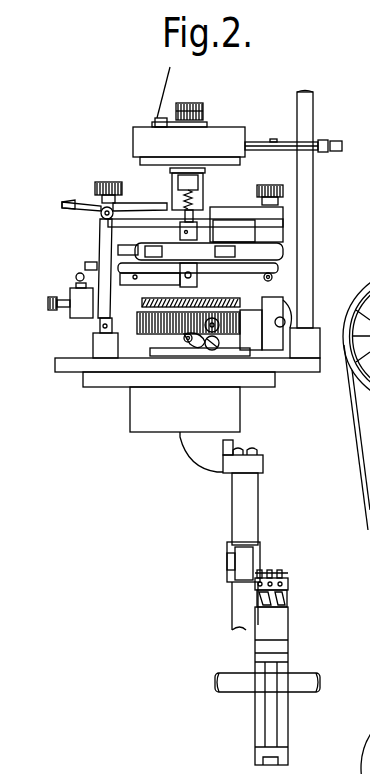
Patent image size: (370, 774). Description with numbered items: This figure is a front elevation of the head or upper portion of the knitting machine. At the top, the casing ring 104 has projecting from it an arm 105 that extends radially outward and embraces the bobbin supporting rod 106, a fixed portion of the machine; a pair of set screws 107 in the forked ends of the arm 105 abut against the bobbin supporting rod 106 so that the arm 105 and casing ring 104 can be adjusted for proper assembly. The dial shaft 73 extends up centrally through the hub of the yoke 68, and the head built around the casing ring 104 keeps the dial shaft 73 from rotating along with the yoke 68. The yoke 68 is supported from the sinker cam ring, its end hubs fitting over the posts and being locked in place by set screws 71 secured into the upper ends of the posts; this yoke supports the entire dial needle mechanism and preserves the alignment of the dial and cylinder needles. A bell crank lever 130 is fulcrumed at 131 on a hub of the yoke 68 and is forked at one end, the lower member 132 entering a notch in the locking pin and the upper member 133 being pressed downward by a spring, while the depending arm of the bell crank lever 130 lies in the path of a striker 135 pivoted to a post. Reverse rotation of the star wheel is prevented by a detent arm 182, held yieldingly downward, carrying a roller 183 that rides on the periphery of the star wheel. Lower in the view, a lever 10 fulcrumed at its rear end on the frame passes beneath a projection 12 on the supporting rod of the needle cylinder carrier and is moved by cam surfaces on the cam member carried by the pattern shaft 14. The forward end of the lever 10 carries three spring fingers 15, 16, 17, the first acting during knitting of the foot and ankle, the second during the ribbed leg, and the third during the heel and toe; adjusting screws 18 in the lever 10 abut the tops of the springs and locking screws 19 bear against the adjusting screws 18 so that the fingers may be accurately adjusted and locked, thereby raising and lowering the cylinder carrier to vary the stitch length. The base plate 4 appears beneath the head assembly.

The base plate 4 is at (310, 368).
The lever 10 is at (288, 582).
The projection 12 is at (269, 570).
The pattern shaft 14 is at (303, 673).
The spring finger 15 is at (259, 596).
The spring finger 16 is at (284, 600).
The spring finger 17 is at (288, 592).
The adjusting screws 18 is at (281, 570).
The locking screws 19 is at (255, 585).
The yoke 68 is at (238, 209).
The set screws 71 is at (109, 182).
The dial shaft 73 is at (196, 103).
The casing ring 104 is at (133, 134).
The arm 105 is at (258, 142).
The bobbin supporting rod 106 is at (313, 127).
The set screws 107 is at (340, 150).
The bell crank lever 130 is at (98, 223).
The fulcrum 131 is at (85, 203).
The lower fork member 132 is at (200, 222).
The upper fork member 133 is at (205, 203).
The striker 135 is at (88, 262).
The detent arm 182 is at (77, 275).
The roller 183 is at (72, 285).